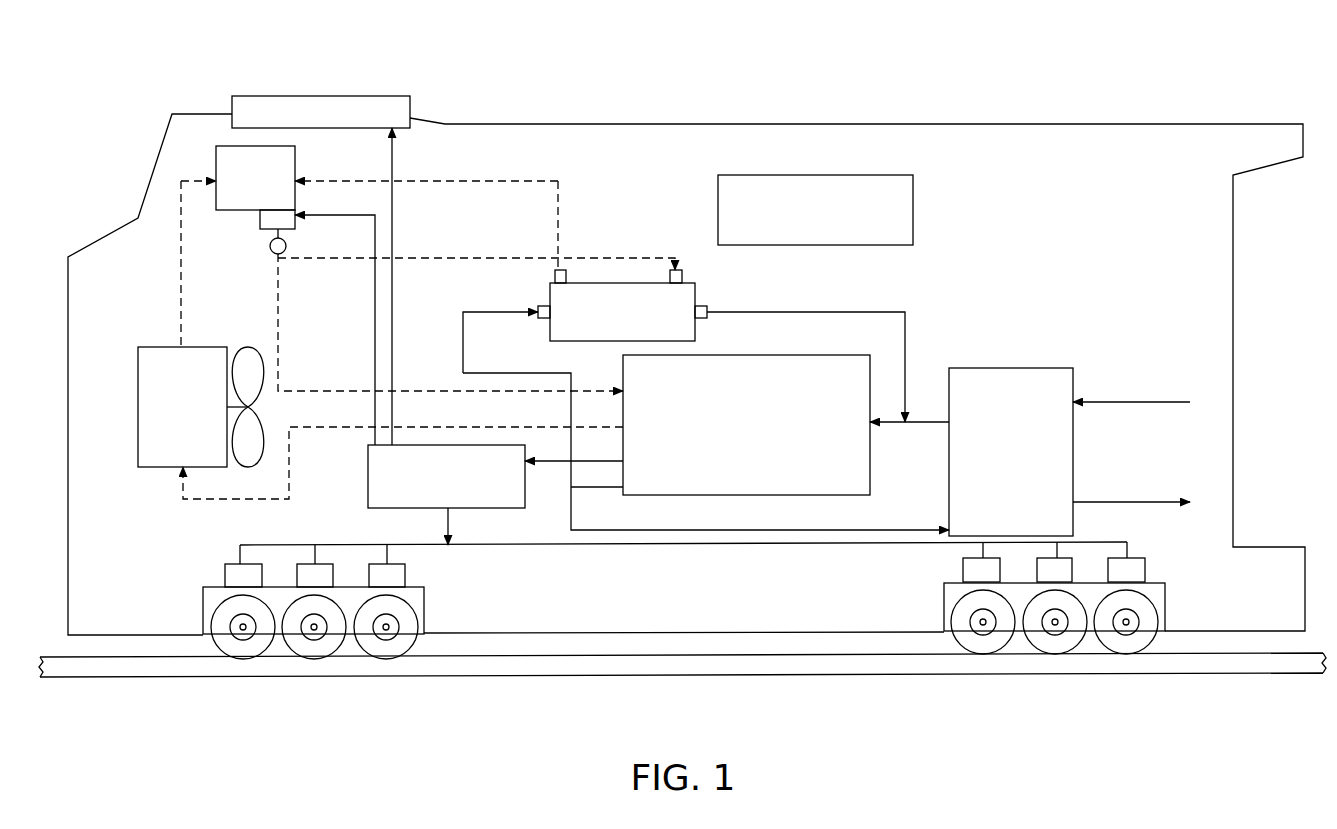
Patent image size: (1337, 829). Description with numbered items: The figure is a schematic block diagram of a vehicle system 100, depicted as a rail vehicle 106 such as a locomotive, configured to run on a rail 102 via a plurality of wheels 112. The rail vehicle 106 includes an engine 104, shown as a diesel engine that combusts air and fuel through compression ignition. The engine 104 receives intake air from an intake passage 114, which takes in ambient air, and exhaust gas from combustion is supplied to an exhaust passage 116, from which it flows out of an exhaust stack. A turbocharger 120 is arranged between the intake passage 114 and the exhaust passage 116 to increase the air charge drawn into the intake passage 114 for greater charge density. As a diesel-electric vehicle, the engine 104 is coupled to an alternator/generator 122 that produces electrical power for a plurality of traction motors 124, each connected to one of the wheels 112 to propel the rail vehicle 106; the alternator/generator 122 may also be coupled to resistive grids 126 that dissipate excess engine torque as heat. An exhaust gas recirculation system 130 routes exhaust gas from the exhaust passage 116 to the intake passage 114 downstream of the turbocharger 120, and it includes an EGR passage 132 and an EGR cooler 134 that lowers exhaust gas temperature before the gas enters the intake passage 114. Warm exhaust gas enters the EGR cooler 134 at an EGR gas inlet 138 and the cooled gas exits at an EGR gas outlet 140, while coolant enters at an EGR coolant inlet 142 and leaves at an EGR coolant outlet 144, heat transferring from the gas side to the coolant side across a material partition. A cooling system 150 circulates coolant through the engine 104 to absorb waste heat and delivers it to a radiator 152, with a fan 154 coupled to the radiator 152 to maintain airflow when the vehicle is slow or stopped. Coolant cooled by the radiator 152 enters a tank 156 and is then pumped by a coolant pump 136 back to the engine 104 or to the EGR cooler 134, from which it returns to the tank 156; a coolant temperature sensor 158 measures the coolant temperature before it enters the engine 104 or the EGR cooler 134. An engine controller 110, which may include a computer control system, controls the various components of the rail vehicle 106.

The vehicle system 100 is at (1133, 62).
The rail 102 is at (1236, 674).
The engine 104 is at (746, 425).
The rail vehicle 106 is at (979, 124).
The engine controller 110 is at (914, 187).
The wheels 112 is at (410, 617).
The intake passage 114 is at (1106, 404).
The exhaust passage 116 is at (1088, 504).
The turbocharger 120 is at (971, 452).
The alternator/generator 122 is at (368, 480).
The traction motors 124 is at (405, 576).
The resistive grids 126 is at (404, 96).
The exhaust gas recirculation system 130 is at (906, 298).
The EGR passage 132 is at (485, 311).
The EGR cooler 134 is at (622, 312).
The coolant pump 136 is at (260, 221).
The EGR gas inlet 138 is at (545, 303).
The EGR gas outlet 140 is at (705, 305).
The EGR coolant inlet 142 is at (678, 272).
The EGR coolant outlet 144 is at (565, 272).
The cooling system 150 is at (156, 303).
The radiator 152 is at (182, 407).
The fan 154 is at (258, 346).
The tank 156 is at (295, 295).
The coolant temperature sensor 158 is at (288, 252).